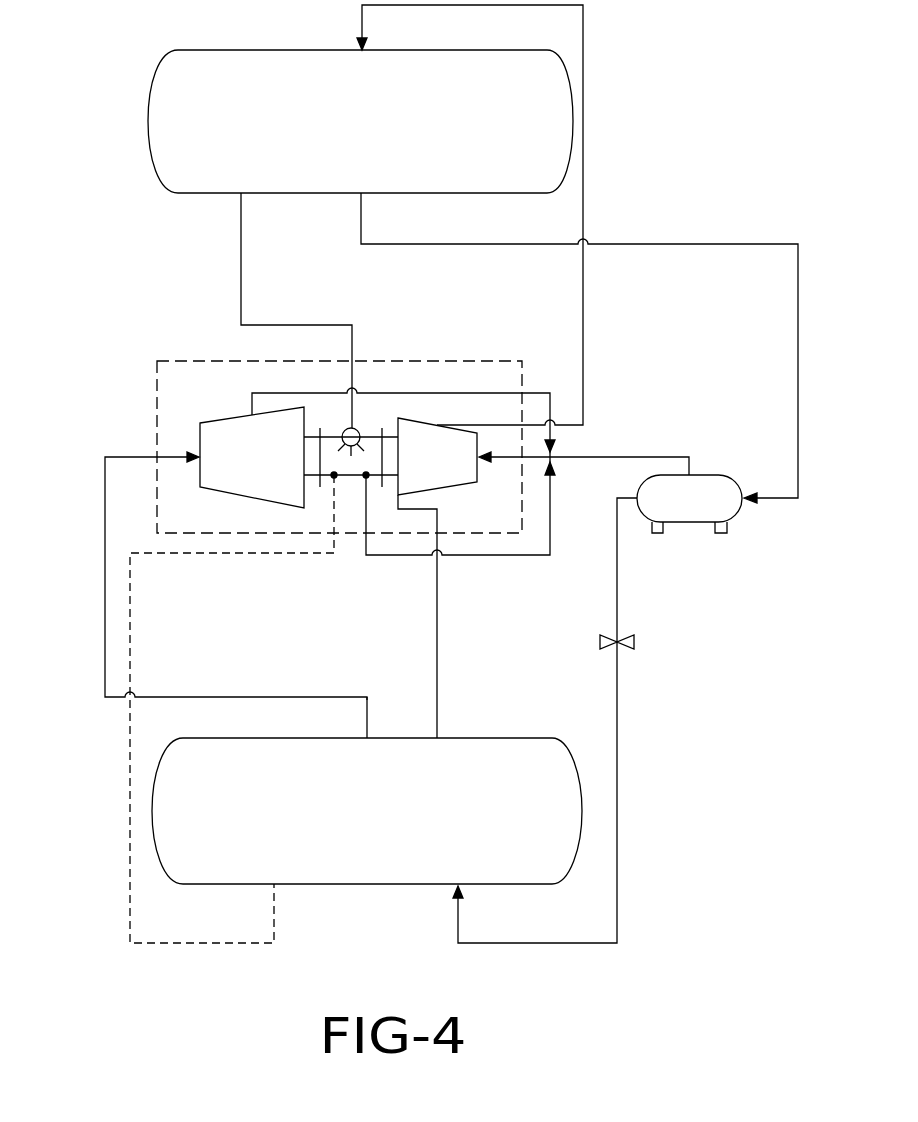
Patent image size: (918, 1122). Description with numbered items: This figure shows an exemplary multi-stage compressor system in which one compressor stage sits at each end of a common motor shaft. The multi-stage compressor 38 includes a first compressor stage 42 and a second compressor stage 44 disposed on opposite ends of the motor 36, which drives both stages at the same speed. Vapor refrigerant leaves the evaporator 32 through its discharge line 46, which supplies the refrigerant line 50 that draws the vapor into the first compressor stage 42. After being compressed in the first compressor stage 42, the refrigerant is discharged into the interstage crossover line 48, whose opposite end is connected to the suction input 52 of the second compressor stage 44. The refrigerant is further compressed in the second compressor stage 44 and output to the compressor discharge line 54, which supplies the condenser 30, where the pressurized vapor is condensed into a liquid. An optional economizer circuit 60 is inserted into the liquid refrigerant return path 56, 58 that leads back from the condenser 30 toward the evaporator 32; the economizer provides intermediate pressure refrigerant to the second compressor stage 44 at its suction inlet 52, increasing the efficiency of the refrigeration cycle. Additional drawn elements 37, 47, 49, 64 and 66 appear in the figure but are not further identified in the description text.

The condenser 30 is at (345, 136).
The evaporator 32 is at (352, 827).
The motor 36 is at (361, 441).
The conduit from first tank 37 is at (241, 256).
The multi-stage compressor 38 is at (157, 391).
The first compressor stage 42 is at (239, 470).
The second compressor stage 44 is at (425, 470).
The discharge line 46 is at (372, 738).
The optional conduit 47 is at (178, 945).
The interstage crossover line 48 is at (418, 392).
The conduit 49 is at (499, 558).
The refrigerant line 50 is at (105, 518).
The suction input 52 is at (481, 466).
The compressor discharge line 54 is at (583, 293).
The liquid refrigerant return path 56 is at (798, 373).
The liquid refrigerant return path 58 is at (617, 571).
The economizer circuit 60 is at (702, 512).
The turbine discharge conduit 64 is at (437, 624).
The valve 66 is at (634, 642).